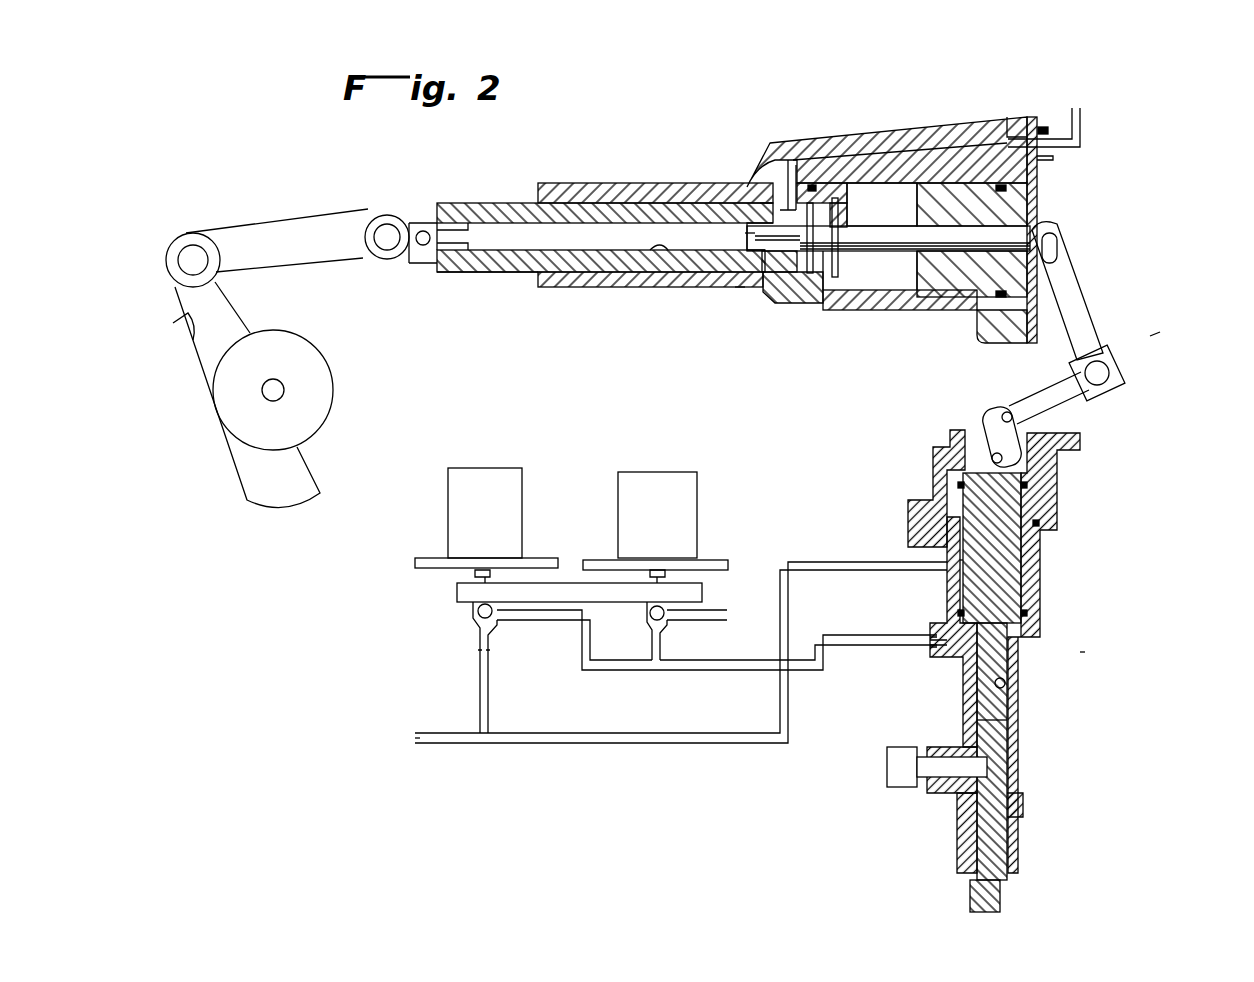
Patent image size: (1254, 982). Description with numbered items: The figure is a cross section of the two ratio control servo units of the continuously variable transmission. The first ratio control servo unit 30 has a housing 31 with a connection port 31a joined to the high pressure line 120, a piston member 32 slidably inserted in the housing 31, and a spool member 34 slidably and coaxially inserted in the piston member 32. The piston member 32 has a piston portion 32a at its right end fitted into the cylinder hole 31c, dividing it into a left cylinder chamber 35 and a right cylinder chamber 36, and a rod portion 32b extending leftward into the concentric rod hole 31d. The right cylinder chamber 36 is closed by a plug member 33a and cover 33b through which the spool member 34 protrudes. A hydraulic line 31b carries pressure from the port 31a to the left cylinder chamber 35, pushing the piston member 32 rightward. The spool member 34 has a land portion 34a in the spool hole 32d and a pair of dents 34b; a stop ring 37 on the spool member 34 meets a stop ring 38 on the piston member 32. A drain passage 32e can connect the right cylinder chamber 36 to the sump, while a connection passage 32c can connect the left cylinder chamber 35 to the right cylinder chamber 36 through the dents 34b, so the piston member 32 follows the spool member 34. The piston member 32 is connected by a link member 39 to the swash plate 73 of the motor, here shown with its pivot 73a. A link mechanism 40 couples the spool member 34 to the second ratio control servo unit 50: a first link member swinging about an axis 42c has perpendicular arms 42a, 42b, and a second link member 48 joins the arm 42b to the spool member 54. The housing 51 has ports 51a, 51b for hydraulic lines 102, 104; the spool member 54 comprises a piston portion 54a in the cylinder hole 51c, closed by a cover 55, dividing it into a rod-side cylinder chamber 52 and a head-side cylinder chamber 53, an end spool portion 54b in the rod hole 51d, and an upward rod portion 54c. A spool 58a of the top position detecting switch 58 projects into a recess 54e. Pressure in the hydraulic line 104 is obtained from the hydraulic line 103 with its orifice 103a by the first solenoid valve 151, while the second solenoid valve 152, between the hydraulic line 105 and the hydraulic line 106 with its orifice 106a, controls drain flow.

The first ratio control servo unit 30 is at (727, 108).
The housing 31 is at (607, 183).
The connection port 31a is at (1043, 128).
The hydraulic line 31b is at (893, 157).
The cylinder hole 31c is at (890, 295).
The rod hole 31d is at (612, 290).
The piston member 32 is at (473, 203).
The piston portion 32a is at (800, 300).
The rod portion 32b is at (518, 275).
The connection passage 32c is at (760, 203).
The spool hole 32d is at (662, 250).
The drain passage 32e is at (740, 290).
The plug member 33a is at (1040, 212).
The cover 33b is at (1040, 170).
The spool member 34 is at (876, 255).
The land portion 34a is at (743, 238).
The dents 34b is at (757, 190).
The left cylinder chamber 35 is at (770, 300).
The right cylinder chamber 36 is at (893, 213).
The stop ring 37 is at (813, 275).
The stop ring 38 is at (838, 278).
The link member 39 is at (283, 226).
The link mechanism 40 is at (1172, 334).
The arm 42a is at (1077, 297).
The arm 42b is at (1050, 410).
The axis 42c is at (1065, 376).
The second link member 48 is at (985, 412).
The second ratio control servo unit 50 is at (1096, 658).
The housing 51 is at (1035, 591).
The port 51a is at (940, 521).
The port 51b is at (930, 648).
The cylinder hole 51c is at (1045, 541).
The rod hole 51d is at (1010, 686).
The rod-side cylinder chamber 52 is at (953, 586).
The head-side cylinder chamber 53 is at (940, 630).
The spool member 54 is at (1010, 568).
The piston portion 54a is at (1025, 618).
The end spool portion 54b is at (1000, 722).
The rod portion 54c is at (1055, 481).
The recess 54e is at (1018, 792).
The cover 55 is at (935, 455).
The top position detecting switch 58 is at (900, 782).
The spool 58a is at (947, 790).
The swash plate 73 is at (295, 495).
The cam roller 73a is at (284, 389).
The hydraulic line 102 is at (640, 745).
The hydraulic line 103 is at (479, 690).
The orifice 103a is at (490, 652).
The hydraulic line 104 is at (683, 668).
The hydraulic line 105 is at (648, 638).
The hydraulic line 106 is at (718, 612).
The orifice 106a is at (687, 622).
The high pressure line 120 is at (1083, 125).
The first solenoid valve 151 is at (514, 468).
The second solenoid valve 152 is at (685, 472).